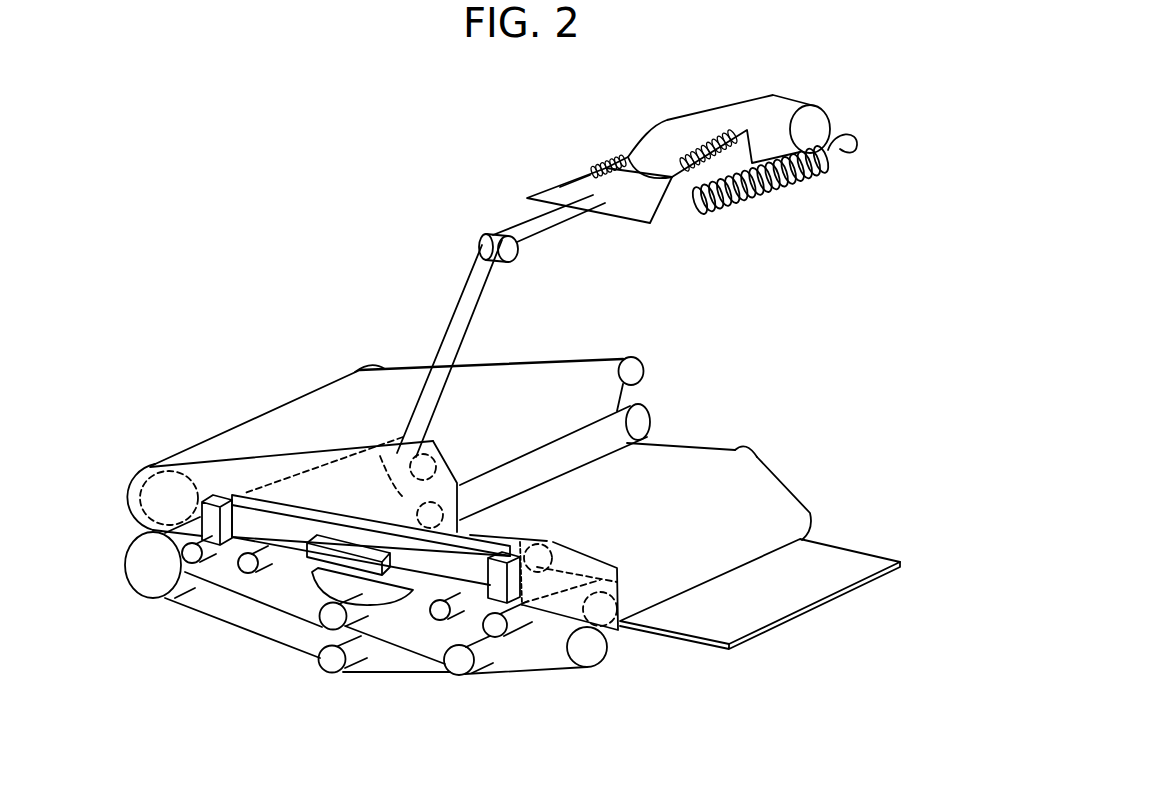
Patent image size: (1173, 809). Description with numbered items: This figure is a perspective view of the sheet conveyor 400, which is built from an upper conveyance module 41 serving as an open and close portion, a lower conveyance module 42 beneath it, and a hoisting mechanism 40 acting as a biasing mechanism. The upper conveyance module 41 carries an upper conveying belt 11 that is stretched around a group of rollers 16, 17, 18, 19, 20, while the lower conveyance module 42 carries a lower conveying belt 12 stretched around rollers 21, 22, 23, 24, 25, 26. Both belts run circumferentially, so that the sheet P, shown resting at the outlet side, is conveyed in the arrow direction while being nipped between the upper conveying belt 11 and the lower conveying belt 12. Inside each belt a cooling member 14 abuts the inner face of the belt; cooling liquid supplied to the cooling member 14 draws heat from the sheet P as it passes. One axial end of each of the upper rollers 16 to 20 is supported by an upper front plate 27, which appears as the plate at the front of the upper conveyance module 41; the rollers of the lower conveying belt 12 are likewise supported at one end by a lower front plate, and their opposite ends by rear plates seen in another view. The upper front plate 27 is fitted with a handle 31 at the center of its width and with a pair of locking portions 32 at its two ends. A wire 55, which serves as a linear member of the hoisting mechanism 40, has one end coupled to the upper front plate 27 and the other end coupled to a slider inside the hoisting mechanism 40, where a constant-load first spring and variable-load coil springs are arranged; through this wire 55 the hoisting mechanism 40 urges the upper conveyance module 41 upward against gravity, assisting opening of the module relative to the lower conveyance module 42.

The sheet conveyor 400 is at (866, 270).
The upper conveyance module 41 is at (320, 347).
The lower conveyance module 42 is at (520, 703).
The hoisting mechanism 40 is at (660, 118).
The wire 55 is at (470, 303).
The upper conveying belt 11 is at (302, 412).
The lower conveying belt 12 is at (250, 607).
The cooling member 14 is at (378, 596).
The roller 16 is at (604, 617).
The roller 17 is at (748, 452).
The roller 18 is at (632, 355).
The roller 19 is at (152, 487).
The roller 20 is at (641, 420).
The roller 21 is at (585, 650).
The roller 22 is at (456, 664).
The roller 23 is at (325, 620).
The roller 24 is at (330, 663).
The roller 25 is at (150, 572).
The roller 26 is at (240, 567).
The upper front plate 27 is at (253, 470).
The handle 31 is at (300, 555).
The locking portion 32 is at (213, 496).
The sheet P is at (852, 557).